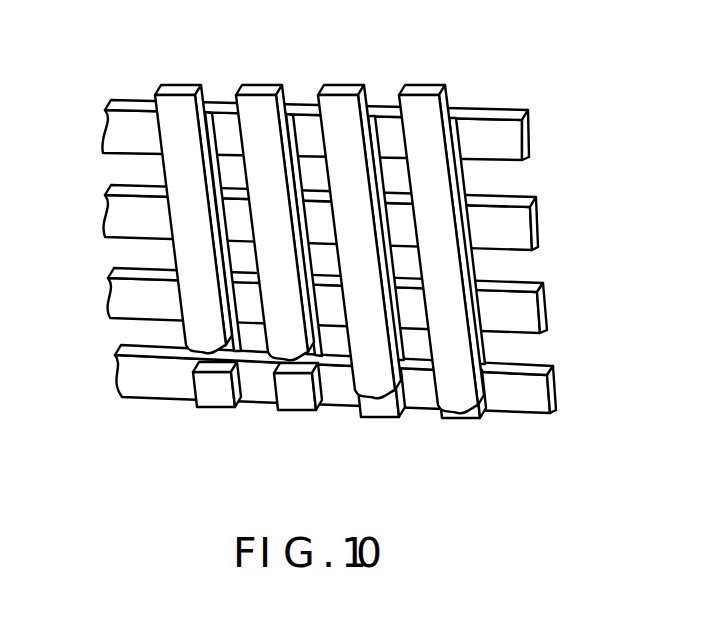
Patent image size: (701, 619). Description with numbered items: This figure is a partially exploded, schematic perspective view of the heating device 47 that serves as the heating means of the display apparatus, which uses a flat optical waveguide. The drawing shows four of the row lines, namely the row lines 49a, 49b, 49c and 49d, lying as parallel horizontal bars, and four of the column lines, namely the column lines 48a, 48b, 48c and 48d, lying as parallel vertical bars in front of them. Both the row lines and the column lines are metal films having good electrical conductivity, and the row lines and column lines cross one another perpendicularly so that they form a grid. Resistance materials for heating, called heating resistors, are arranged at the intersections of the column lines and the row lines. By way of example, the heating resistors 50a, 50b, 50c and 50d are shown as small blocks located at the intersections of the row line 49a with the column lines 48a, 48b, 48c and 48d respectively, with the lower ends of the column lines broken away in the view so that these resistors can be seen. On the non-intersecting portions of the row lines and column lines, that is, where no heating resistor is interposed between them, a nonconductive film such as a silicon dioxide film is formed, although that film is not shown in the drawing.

The heating device 47 is at (372, 252).
The column line 48a is at (181, 83).
The column line 48b is at (259, 83).
The column line 48c is at (345, 83).
The column line 48d is at (424, 86).
The row line 49a is at (552, 391).
The row line 49b is at (545, 313).
The row line 49c is at (535, 224).
The row line 49d is at (527, 138).
The heating resistor 50a is at (210, 407).
The heating resistor 50b is at (298, 410).
The heating resistor 50c is at (380, 417).
The heating resistor 50d is at (456, 418).